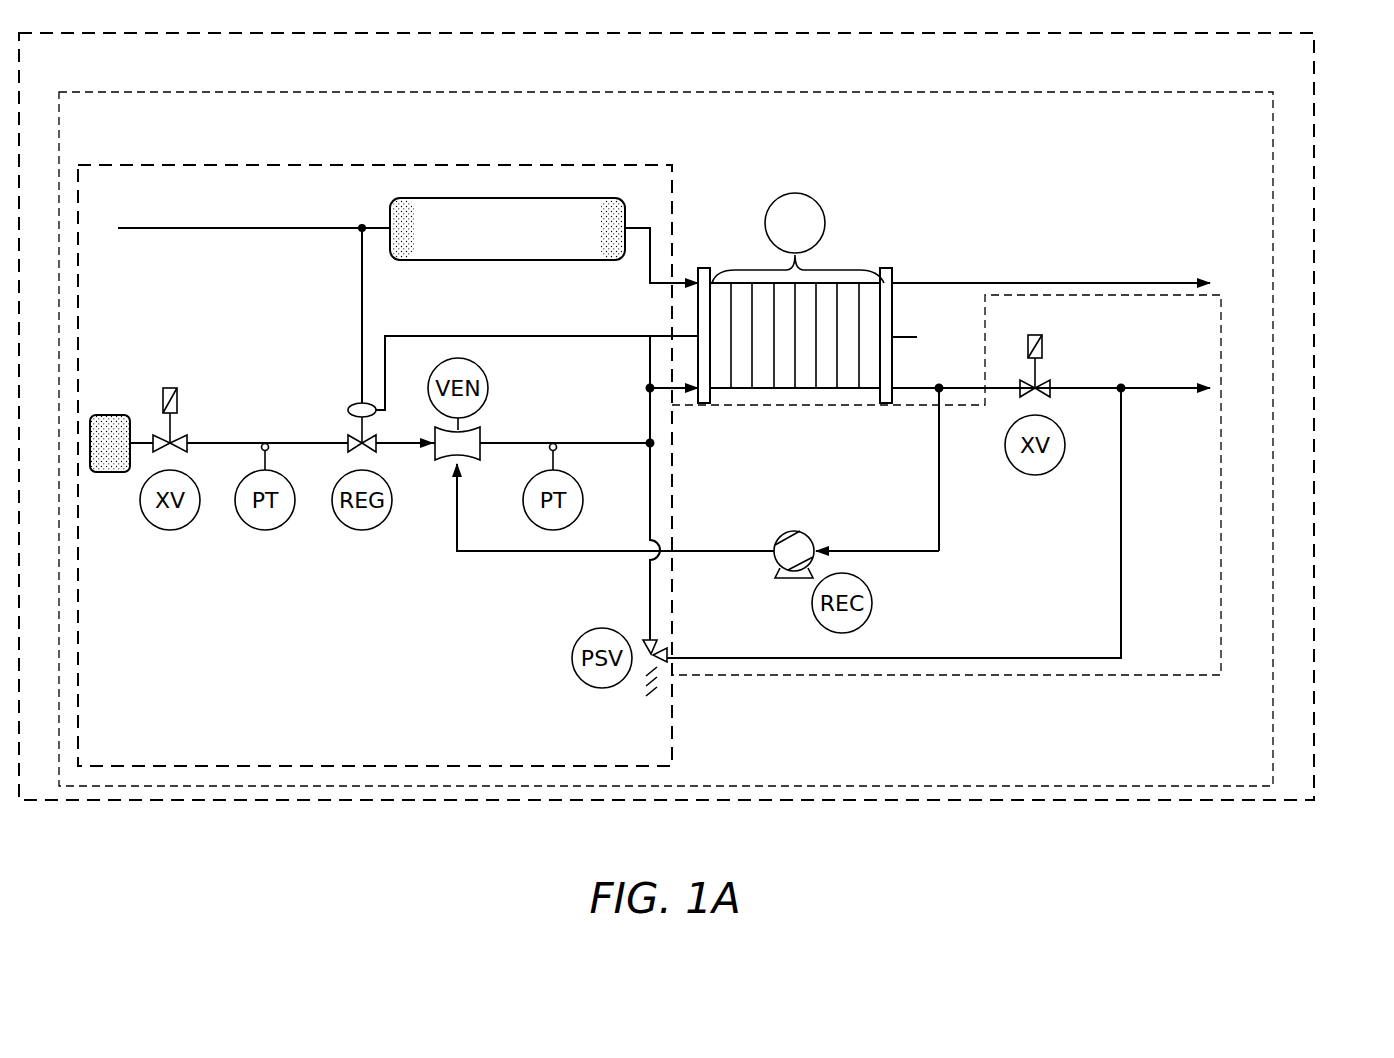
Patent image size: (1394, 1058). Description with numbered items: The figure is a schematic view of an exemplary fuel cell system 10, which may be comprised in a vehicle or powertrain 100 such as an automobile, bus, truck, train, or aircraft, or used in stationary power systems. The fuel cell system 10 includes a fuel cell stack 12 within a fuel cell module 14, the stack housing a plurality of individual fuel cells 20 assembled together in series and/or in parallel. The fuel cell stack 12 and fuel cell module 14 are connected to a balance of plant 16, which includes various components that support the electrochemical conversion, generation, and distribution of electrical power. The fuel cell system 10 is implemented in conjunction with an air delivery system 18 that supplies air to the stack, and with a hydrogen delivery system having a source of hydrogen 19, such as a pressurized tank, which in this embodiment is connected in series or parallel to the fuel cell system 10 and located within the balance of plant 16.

The vehicle 100 is at (1332, 140).
The fuel cell system 10 is at (1282, 229).
The fuel cell stack 12 is at (795, 252).
The fuel cell module 14 is at (708, 252).
The balance of plant 16 is at (418, 161).
The air delivery system 18 is at (518, 270).
The source of hydrogen 19 is at (112, 410).
The fuel cell 20 is at (843, 280).